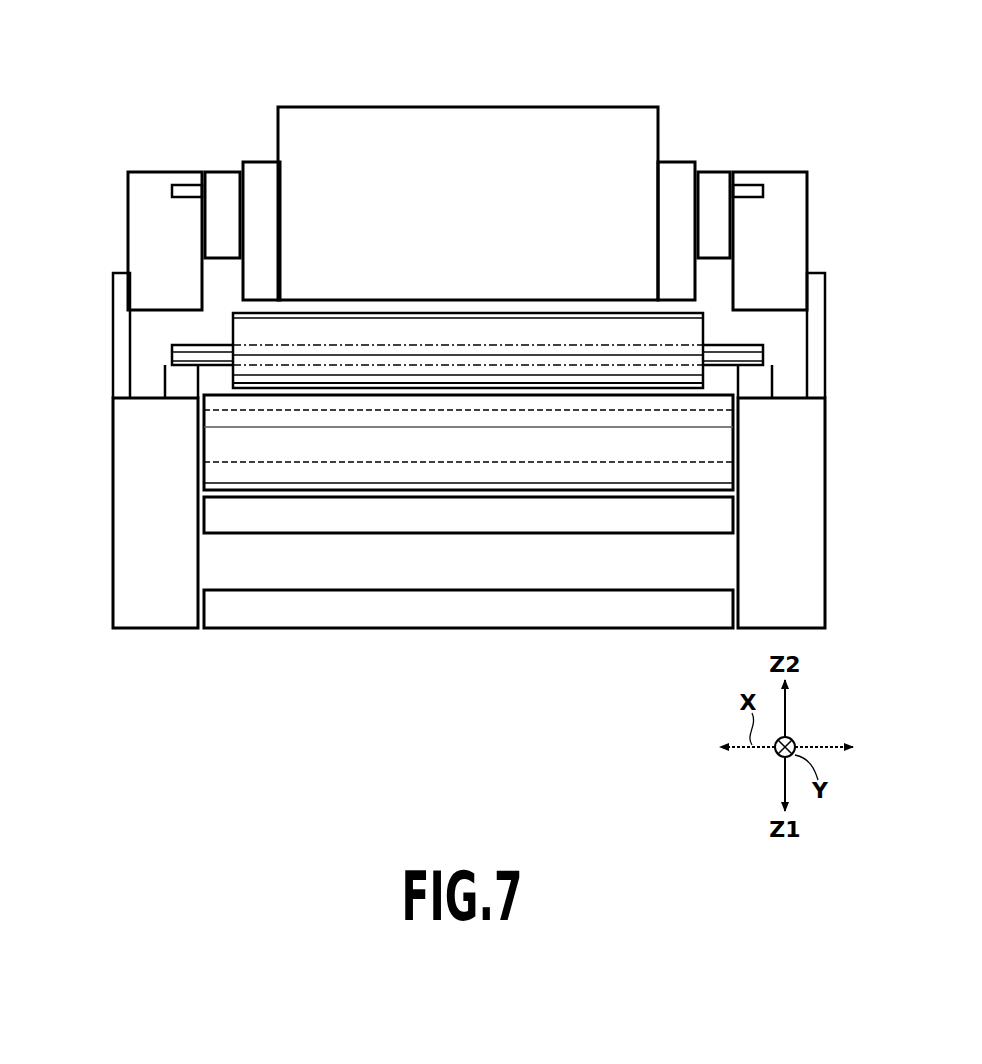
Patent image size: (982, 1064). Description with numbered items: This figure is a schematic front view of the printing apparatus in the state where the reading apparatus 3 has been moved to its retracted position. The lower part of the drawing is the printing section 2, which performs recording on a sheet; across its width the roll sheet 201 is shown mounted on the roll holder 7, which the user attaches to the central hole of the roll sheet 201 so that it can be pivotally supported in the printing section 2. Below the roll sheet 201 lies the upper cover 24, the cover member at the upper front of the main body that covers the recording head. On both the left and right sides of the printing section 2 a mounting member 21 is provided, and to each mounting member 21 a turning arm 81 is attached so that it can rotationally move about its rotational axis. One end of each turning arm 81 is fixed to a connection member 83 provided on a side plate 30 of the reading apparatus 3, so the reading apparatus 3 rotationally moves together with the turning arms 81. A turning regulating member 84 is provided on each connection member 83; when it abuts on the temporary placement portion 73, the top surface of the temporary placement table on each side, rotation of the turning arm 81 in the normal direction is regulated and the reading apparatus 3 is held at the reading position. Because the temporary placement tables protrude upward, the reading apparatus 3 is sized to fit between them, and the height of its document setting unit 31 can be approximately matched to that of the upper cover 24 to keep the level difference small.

The printing section 2 is at (93, 552).
The reading apparatus 3 is at (468, 150).
The roll holder 7 is at (763, 350).
The mounting member 21 is at (115, 300).
The upper cover 24 is at (213, 443).
The side plate 30 is at (263, 215).
The document setting unit 31 is at (483, 107).
The temporary placement portion 73 is at (172, 385).
The turning arm 81 is at (138, 190).
The connection member 83 is at (223, 190).
The turning regulating member 84 is at (180, 190).
The roll sheet 201 is at (492, 340).